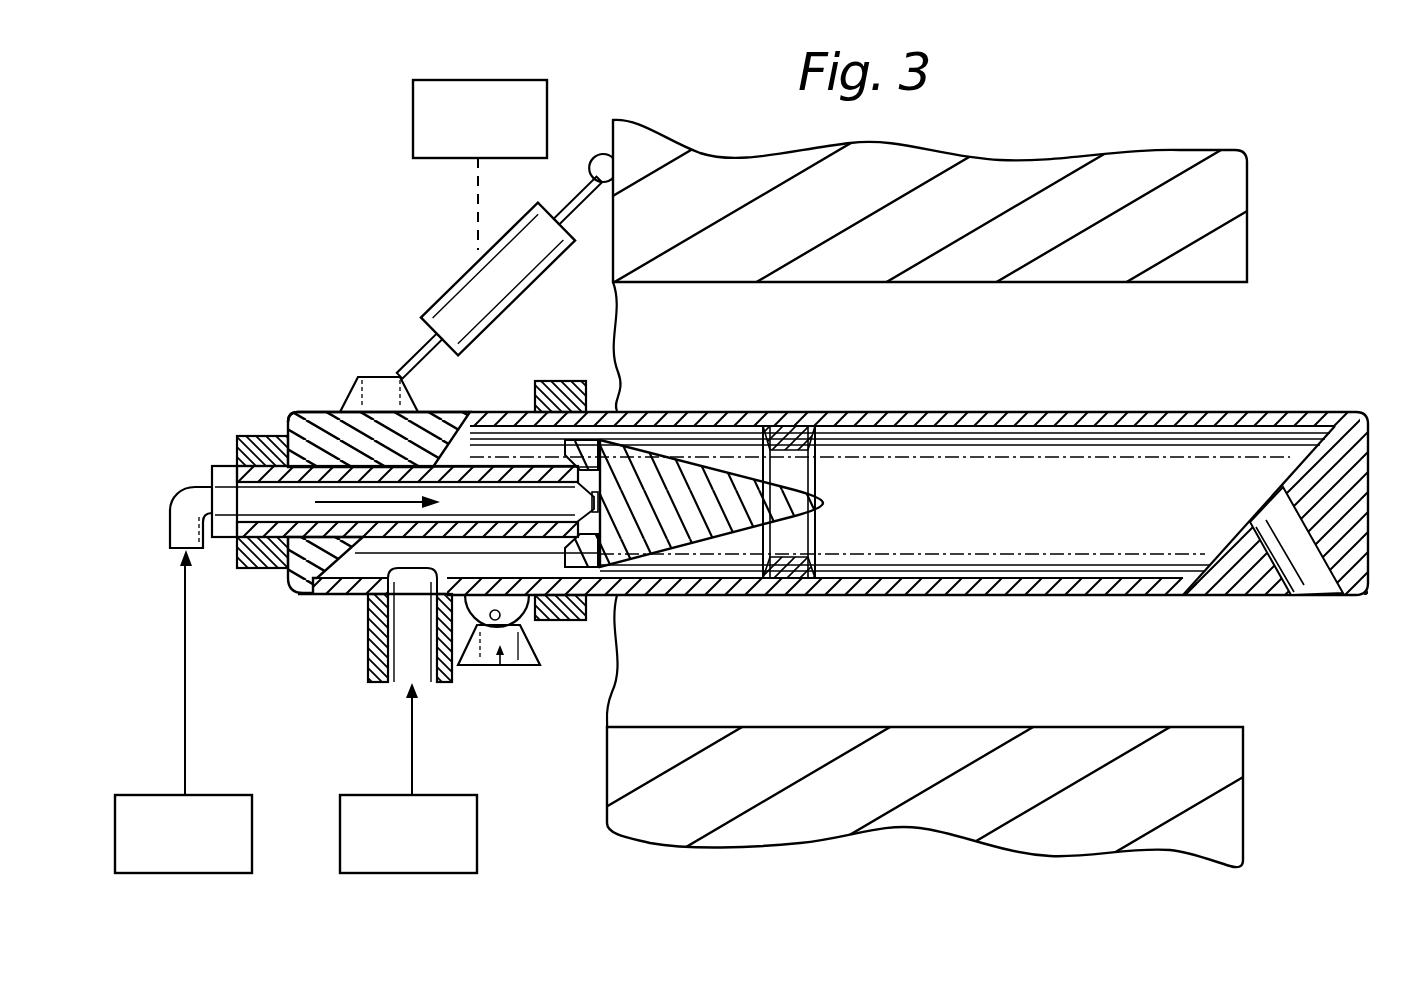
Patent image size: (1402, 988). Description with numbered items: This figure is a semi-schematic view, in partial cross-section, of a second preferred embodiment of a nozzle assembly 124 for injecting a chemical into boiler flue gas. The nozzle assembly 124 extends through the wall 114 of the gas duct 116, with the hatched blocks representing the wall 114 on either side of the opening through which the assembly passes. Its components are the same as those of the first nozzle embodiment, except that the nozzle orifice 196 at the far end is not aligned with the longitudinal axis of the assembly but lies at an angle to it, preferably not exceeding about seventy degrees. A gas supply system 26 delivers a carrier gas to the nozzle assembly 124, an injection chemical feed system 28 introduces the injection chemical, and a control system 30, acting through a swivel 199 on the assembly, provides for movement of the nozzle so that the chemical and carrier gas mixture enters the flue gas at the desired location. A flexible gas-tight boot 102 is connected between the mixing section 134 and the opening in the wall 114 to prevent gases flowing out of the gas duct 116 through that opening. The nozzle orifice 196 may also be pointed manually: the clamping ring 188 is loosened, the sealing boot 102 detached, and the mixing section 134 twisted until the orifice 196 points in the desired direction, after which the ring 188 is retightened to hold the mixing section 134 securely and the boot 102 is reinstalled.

The gas supply system 26 is at (394, 847).
The injection chemical feed system 28 is at (169, 847).
The control system 30 is at (466, 131).
The flexible gas-tight boot 102 is at (622, 343).
The wall 114 is at (952, 231).
The gas duct 116 is at (1357, 135).
The nozzle assembly 124 is at (276, 405).
The mixing section 134 is at (831, 352).
The clamping ring 188 is at (577, 381).
The nozzle orifice 196 is at (1312, 597).
The swivel 199 is at (500, 668).